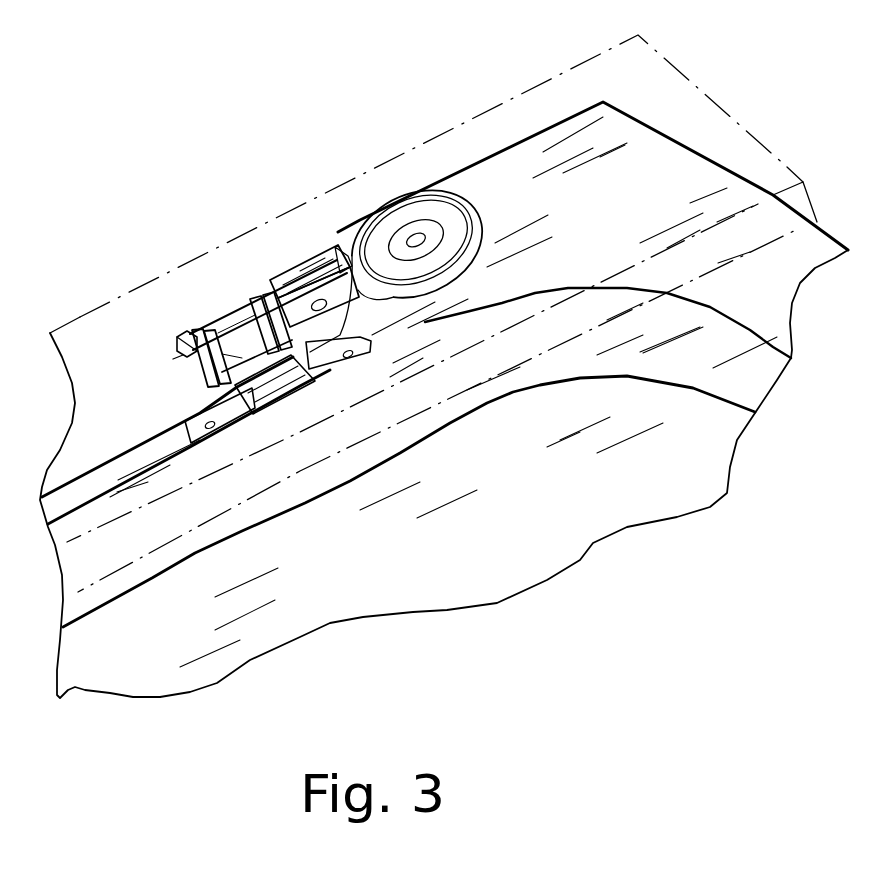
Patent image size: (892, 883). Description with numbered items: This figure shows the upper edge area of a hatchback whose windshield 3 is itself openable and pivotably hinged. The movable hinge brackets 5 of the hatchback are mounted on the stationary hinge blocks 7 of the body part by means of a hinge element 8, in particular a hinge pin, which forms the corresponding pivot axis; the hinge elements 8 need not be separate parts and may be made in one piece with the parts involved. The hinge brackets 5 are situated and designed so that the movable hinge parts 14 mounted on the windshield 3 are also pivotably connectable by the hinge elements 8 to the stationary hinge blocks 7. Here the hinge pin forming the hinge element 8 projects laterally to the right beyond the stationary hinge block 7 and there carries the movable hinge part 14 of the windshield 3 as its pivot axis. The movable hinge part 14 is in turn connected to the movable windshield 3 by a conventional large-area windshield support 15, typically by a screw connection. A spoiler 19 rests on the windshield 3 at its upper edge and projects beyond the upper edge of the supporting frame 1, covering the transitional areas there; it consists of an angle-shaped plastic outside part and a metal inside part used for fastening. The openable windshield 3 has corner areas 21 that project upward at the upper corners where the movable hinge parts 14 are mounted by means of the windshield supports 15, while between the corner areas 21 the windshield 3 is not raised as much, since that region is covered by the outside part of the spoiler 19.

The supporting frame 1 is at (78, 508).
The windshield 3 is at (595, 530).
The hinge bracket 5 is at (182, 333).
The hinge block 7 is at (178, 375).
The hinge element 8 is at (230, 302).
The movable hinge part 14 is at (273, 280).
The windshield support 15 is at (420, 212).
The spoiler 19 is at (487, 107).
The corner area 21 is at (687, 180).